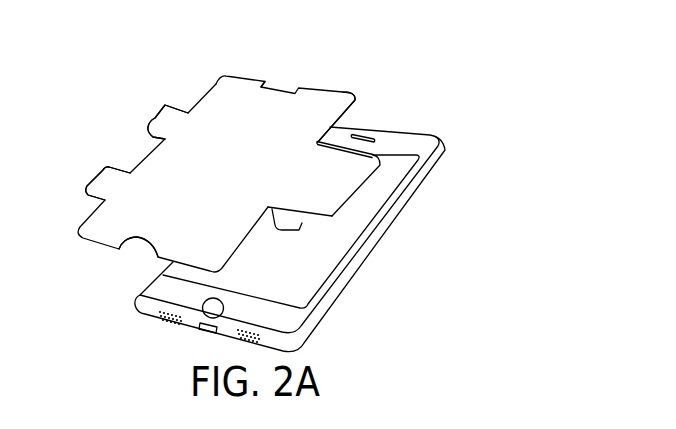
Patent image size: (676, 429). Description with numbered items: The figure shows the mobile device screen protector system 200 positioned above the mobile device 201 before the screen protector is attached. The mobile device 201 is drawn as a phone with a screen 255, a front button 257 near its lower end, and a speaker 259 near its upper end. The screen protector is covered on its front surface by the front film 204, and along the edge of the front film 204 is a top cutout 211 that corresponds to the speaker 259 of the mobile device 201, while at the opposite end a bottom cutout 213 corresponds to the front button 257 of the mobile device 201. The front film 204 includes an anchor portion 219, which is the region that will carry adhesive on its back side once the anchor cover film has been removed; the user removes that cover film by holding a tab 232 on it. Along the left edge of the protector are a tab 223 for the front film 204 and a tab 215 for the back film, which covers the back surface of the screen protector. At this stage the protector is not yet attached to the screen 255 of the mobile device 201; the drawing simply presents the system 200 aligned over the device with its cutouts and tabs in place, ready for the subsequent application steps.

The mobile device screen protector system 200 is at (322, 88).
The mobile device 201 is at (443, 142).
The front film 204 is at (310, 112).
The top cutout 211 is at (282, 87).
The bottom cutout 213 is at (130, 242).
The tab 215 is at (100, 181).
The anchor portion 219 is at (335, 182).
The tab 223 is at (162, 122).
The tab 232 is at (300, 223).
The screen 255 is at (316, 273).
The front button 257 is at (213, 308).
The speaker 259 is at (373, 138).